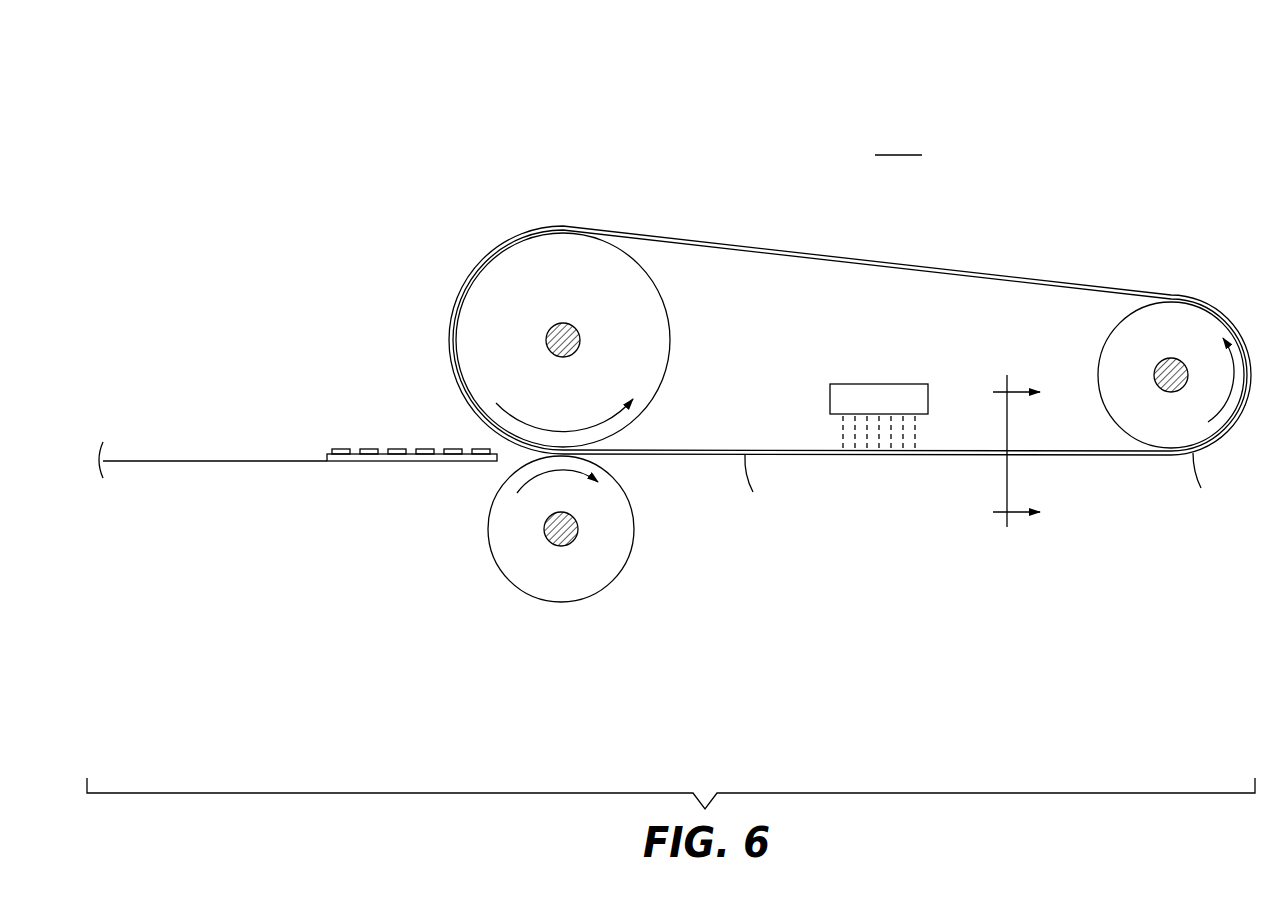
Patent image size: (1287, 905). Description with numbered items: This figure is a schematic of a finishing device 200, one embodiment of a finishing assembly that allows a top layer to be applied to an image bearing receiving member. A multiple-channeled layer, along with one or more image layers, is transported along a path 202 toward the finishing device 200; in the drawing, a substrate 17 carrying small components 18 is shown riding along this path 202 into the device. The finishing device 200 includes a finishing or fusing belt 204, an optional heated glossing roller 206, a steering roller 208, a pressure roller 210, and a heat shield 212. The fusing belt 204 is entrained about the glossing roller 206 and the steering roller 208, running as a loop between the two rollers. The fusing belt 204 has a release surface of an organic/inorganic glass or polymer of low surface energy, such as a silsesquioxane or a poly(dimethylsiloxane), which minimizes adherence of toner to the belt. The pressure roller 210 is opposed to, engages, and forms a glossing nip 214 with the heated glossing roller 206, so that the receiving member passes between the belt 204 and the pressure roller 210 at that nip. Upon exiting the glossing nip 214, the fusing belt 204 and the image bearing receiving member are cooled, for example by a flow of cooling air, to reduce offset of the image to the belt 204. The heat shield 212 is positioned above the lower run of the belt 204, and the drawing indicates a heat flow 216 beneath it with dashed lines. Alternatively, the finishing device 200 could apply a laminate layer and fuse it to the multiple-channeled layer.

The finishing device 200 is at (1192, 148).
The path 202 is at (212, 462).
The fusing belt 204 is at (930, 455).
The heated glossing roller 206 is at (554, 242).
The steering roller 208 is at (1197, 322).
The pressure roller 210 is at (553, 590).
The heat shield 212 is at (830, 401).
The glossing nip 214 is at (590, 457).
The heat flow 216 is at (920, 430).
The substrate 17 is at (340, 458).
The components on substrate 18 is at (343, 442).